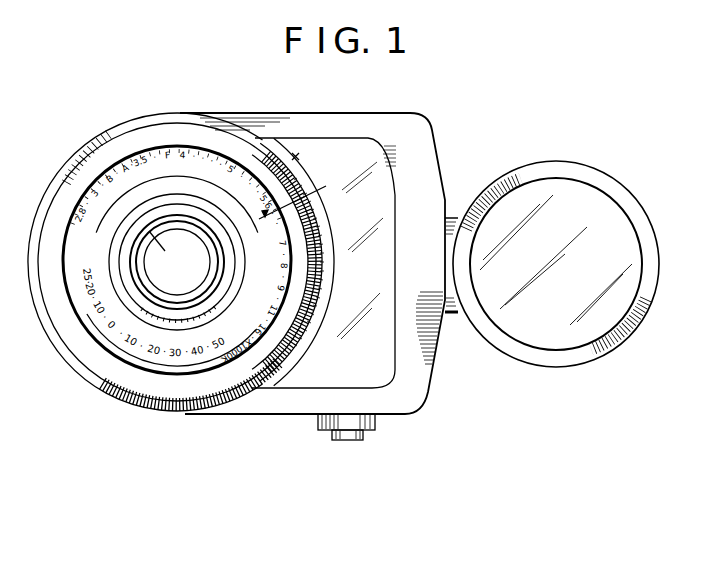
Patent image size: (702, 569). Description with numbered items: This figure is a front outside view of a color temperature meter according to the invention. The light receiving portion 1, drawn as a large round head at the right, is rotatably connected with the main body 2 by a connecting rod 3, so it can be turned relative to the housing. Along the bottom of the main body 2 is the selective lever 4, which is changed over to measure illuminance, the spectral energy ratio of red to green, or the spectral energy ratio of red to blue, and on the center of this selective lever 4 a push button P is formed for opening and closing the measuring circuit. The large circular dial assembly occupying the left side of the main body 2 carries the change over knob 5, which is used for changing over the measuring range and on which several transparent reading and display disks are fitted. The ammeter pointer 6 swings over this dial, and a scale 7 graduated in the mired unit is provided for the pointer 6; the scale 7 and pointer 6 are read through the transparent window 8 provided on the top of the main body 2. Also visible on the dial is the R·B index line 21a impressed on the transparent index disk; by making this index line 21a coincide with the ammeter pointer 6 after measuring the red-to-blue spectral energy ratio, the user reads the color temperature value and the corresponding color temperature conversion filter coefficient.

The light receiving portion 1 is at (586, 199).
The main body 2 is at (399, 122).
The connecting rod 3 is at (450, 313).
The selective lever 4 is at (322, 432).
The change over knob 5 is at (158, 284).
The ammeter pointer 6 is at (326, 186).
The scale 7 is at (313, 345).
The transparent window 8 is at (389, 196).
The R·B index line 21a is at (294, 152).
The push button P is at (355, 441).